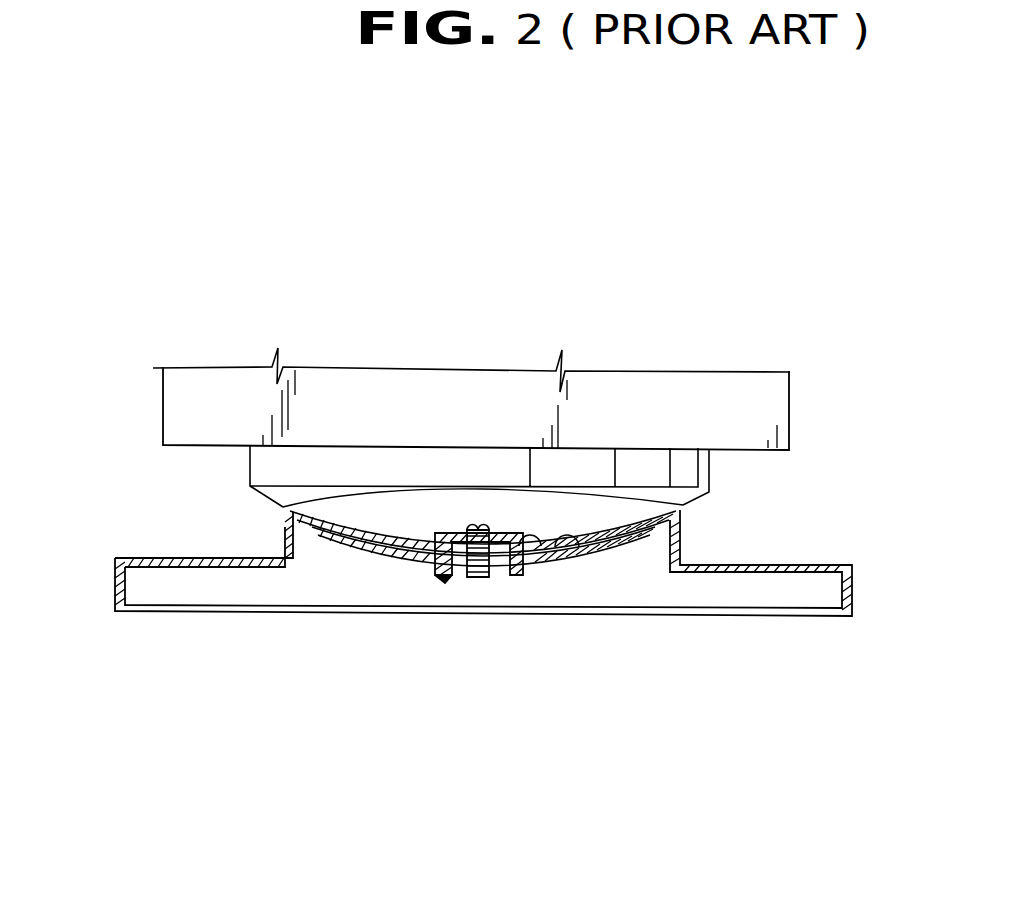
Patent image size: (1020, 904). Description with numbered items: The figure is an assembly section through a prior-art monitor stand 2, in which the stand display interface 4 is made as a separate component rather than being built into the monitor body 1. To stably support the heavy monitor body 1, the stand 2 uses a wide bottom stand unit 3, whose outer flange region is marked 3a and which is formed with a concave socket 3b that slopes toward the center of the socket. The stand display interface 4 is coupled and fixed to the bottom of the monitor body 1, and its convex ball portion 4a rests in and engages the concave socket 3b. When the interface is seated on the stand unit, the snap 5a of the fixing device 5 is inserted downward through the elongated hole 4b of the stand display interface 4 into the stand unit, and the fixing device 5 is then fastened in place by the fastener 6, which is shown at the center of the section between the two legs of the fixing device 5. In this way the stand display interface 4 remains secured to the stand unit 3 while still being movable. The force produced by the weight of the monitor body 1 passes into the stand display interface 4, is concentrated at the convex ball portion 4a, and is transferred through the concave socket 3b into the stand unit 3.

The monitor body 1 is at (188, 405).
The stand 2 is at (210, 647).
The stand unit 3 is at (745, 505).
The flange of case 3a is at (147, 559).
The concave socket 3b is at (287, 508).
The stand display interface 4 is at (250, 470).
The convex ball portion 4a is at (362, 558).
The elongated hole 4b is at (583, 560).
The fixing device 5 is at (533, 560).
The snap 5a is at (445, 584).
The fastener 6 is at (478, 578).